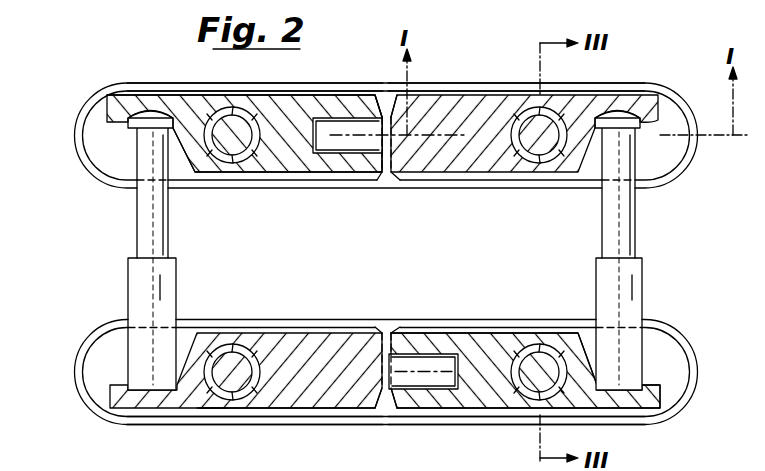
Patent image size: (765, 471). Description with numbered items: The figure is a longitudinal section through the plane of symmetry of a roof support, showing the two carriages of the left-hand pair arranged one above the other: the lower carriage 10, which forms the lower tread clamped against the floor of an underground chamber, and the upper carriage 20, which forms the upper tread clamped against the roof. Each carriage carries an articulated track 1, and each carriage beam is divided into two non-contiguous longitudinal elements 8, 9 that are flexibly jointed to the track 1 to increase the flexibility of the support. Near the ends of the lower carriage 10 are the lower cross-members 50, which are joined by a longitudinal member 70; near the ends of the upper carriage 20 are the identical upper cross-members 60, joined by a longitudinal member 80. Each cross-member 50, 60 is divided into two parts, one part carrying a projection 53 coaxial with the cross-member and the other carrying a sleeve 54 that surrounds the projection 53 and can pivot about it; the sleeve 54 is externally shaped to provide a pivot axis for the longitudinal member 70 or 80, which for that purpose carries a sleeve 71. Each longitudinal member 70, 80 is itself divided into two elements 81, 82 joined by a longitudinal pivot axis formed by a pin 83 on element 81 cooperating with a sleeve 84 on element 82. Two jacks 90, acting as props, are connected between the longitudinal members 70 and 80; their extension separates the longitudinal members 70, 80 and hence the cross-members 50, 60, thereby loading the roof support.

The articulated track 1 is at (377, 253).
The longitudinal element 8 is at (250, 92).
The longitudinal element 9 is at (500, 90).
The carriage 10 is at (93, 378).
The carriage 20 is at (90, 124).
The cross-member 50 is at (385, 335).
The projection 53 is at (236, 370).
The sleeve 54 is at (220, 350).
The cross-member 60 is at (237, 141).
The longitudinal member 70 is at (282, 392).
The sleeve 71 is at (214, 398).
The longitudinal member 80 is at (176, 104).
The element 81 is at (284, 107).
The element 82 is at (440, 115).
The pin 83 is at (337, 127).
The sleeve 84 is at (413, 398).
The jack 90 is at (150, 230).